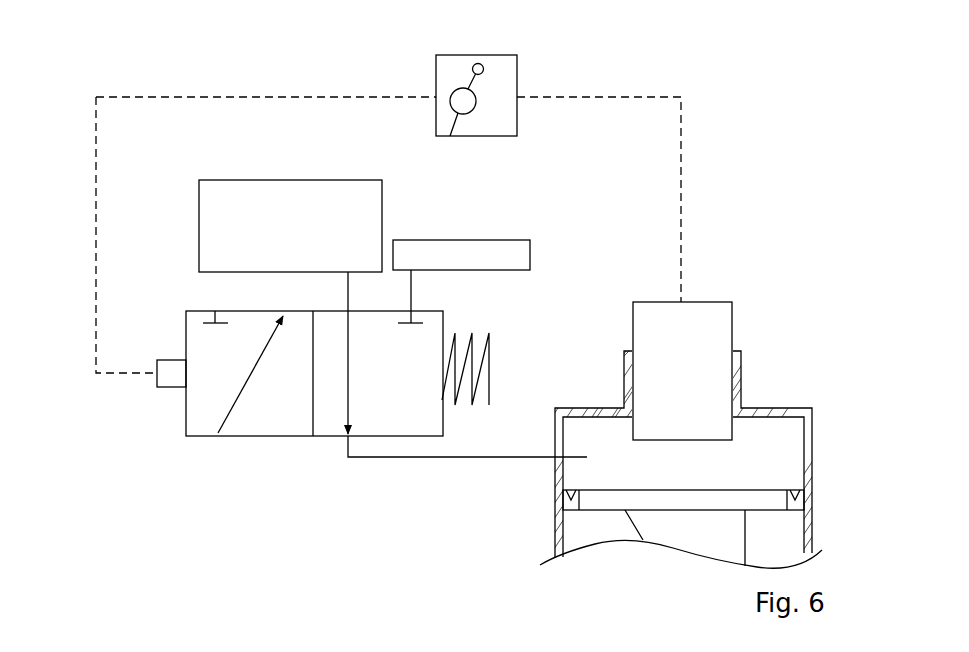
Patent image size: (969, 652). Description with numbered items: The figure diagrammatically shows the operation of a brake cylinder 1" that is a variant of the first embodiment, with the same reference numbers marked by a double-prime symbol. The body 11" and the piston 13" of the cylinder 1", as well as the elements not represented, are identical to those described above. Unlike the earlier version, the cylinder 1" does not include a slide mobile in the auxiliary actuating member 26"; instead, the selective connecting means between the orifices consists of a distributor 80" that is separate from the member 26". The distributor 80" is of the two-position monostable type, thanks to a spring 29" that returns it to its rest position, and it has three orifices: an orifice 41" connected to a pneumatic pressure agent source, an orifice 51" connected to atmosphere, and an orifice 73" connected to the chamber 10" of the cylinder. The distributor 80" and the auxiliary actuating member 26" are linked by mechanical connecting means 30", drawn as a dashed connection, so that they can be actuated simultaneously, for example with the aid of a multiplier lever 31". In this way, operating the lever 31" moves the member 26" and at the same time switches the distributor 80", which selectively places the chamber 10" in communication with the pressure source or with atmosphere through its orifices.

The cylinder 1 is at (737, 80).
The mechanical connecting means 30 is at (96, 180).
The multiplier lever 31 is at (450, 107).
The orifice 41 is at (348, 310).
The orifice 51 is at (411, 310).
The distributor 80 is at (168, 336).
The orifice 73 is at (348, 438).
The spring 29 is at (490, 369).
The body 11 is at (812, 487).
The auxiliary actuating member 26 is at (650, 310).
The chamber 10 is at (634, 480).
The piston 13 is at (766, 500).